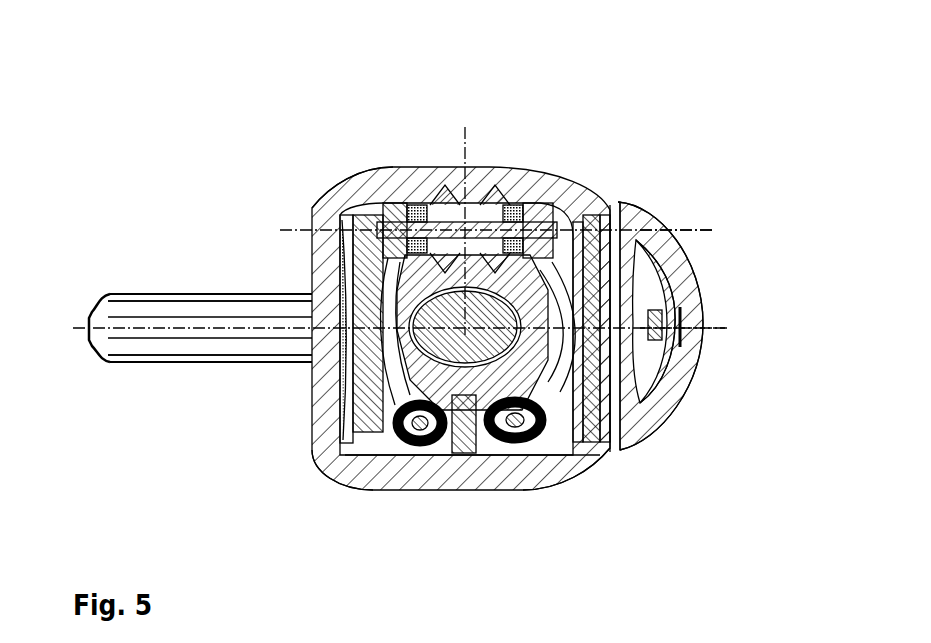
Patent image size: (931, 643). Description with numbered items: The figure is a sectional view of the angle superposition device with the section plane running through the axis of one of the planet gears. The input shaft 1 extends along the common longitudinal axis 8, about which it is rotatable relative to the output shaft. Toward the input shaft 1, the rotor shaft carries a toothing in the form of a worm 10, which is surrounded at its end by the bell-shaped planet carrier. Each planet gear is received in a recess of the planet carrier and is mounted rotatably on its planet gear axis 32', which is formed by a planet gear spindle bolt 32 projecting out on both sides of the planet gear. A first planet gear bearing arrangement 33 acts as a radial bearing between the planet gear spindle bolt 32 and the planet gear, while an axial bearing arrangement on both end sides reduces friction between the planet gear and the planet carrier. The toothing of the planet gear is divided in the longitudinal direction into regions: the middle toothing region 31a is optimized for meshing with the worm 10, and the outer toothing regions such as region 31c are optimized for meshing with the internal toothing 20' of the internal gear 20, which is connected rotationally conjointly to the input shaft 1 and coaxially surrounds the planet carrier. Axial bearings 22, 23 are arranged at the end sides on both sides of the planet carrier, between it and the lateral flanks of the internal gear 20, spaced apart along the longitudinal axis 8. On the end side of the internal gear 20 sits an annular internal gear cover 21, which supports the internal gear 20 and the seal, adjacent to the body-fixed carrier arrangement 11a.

The input shaft 1 is at (203, 352).
The worm 10 is at (298, 362).
The internal gear 20 is at (461, 356).
The internal toothing 20' is at (472, 508).
The internal gear cover 21 is at (605, 380).
The carrier arrangement 11a is at (687, 362).
The longitudinal axis 8 is at (713, 325).
The axial bearing 22 is at (617, 413).
The axial bearing 23 is at (346, 408).
The planet gear spindle bolt 32 is at (391, 221).
The outer toothing region 31c is at (488, 195).
The planet gear axis 32' is at (708, 189).
The first planet gear bearing arrangement 33 is at (468, 142).
The middle toothing region 31a is at (345, 258).